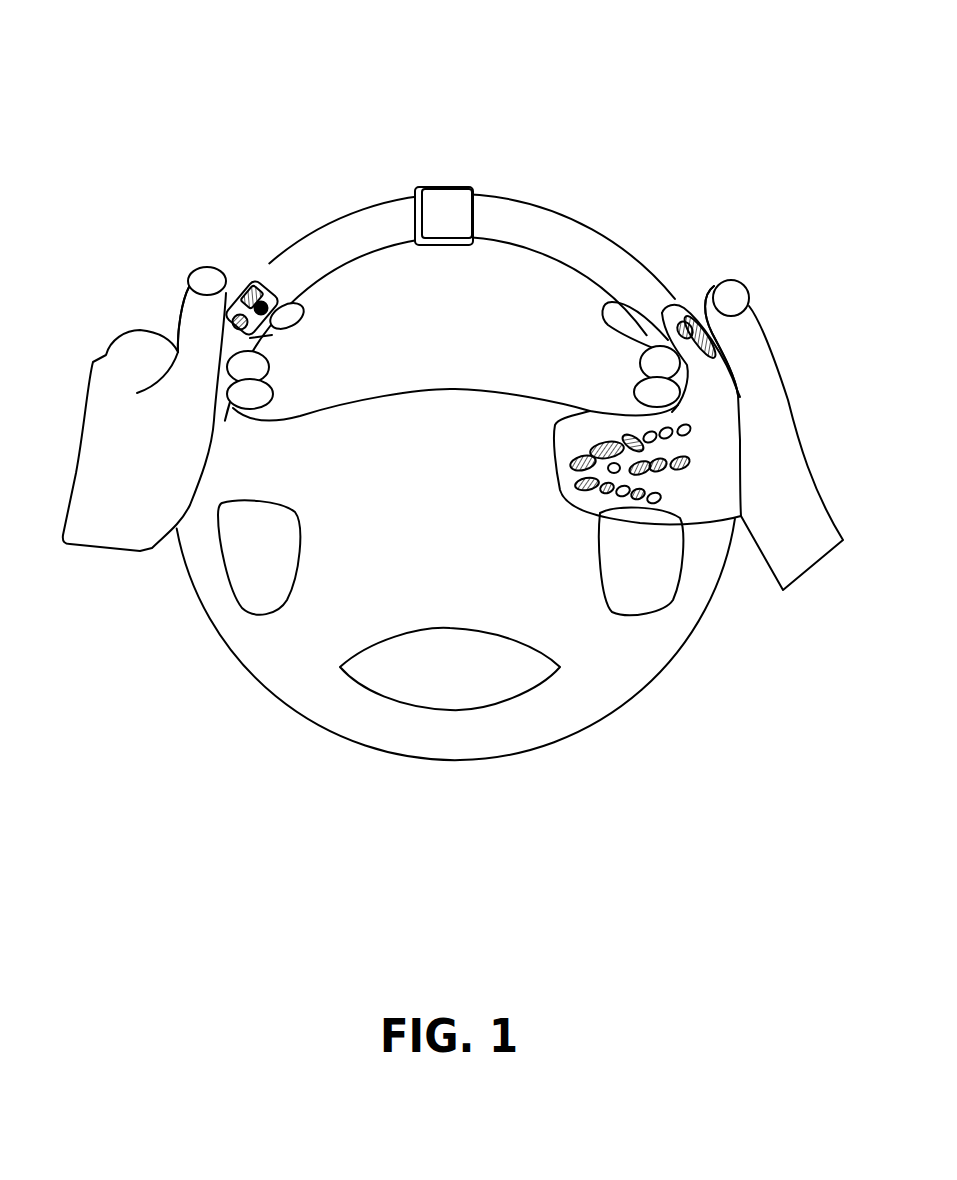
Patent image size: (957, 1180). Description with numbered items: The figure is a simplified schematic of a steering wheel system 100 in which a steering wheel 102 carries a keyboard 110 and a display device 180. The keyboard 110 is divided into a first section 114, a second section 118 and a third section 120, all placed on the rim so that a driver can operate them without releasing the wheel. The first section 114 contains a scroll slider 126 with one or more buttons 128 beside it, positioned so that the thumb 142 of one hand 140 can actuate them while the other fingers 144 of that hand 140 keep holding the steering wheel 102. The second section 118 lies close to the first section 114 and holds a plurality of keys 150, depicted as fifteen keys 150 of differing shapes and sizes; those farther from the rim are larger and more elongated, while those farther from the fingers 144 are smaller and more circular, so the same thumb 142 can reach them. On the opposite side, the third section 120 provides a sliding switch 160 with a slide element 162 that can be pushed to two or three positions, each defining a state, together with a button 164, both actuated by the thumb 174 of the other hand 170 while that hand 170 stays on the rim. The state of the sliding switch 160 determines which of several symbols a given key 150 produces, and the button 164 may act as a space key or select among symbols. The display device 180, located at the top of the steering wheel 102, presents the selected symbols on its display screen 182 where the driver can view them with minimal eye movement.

The steering wheel system 100 is at (827, 55).
The steering wheel 102 is at (347, 737).
The keyboard 110 is at (693, 512).
The first section 114 is at (687, 298).
The second section 118 is at (583, 503).
The third section 120 is at (268, 277).
The scroll slider 126 is at (706, 302).
The buttons 128 is at (686, 302).
The hand 140 is at (779, 366).
The thumb 142 is at (765, 330).
The fingers 144 is at (635, 241).
The keys 150 is at (610, 587).
The sliding switch 160 is at (292, 200).
The slide element 162 is at (268, 308).
The button 164 is at (230, 294).
The hand 170 is at (185, 478).
The thumb 174 is at (180, 308).
The display device 180 is at (444, 194).
The display screen 182 is at (448, 223).